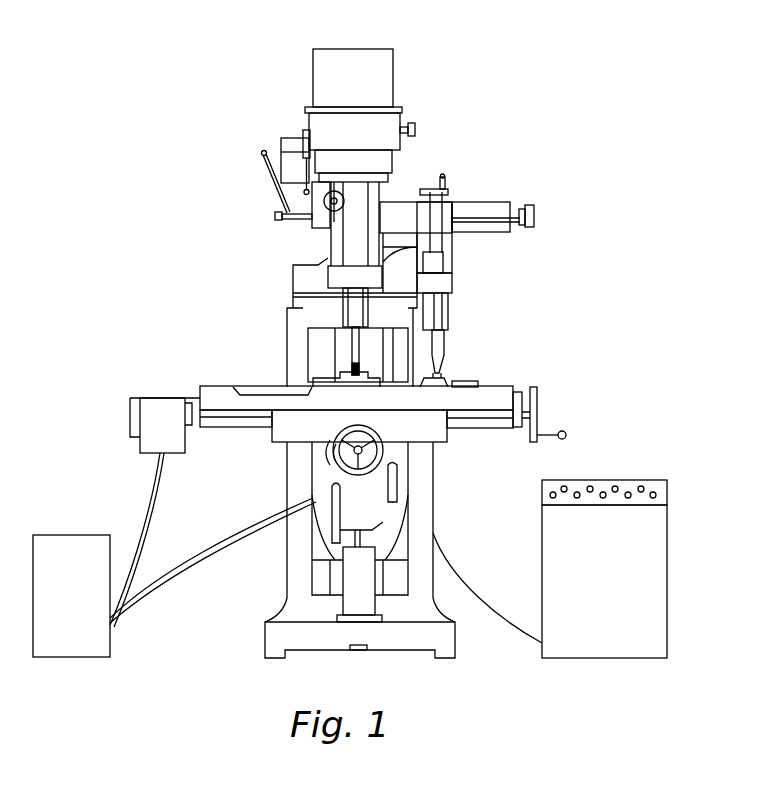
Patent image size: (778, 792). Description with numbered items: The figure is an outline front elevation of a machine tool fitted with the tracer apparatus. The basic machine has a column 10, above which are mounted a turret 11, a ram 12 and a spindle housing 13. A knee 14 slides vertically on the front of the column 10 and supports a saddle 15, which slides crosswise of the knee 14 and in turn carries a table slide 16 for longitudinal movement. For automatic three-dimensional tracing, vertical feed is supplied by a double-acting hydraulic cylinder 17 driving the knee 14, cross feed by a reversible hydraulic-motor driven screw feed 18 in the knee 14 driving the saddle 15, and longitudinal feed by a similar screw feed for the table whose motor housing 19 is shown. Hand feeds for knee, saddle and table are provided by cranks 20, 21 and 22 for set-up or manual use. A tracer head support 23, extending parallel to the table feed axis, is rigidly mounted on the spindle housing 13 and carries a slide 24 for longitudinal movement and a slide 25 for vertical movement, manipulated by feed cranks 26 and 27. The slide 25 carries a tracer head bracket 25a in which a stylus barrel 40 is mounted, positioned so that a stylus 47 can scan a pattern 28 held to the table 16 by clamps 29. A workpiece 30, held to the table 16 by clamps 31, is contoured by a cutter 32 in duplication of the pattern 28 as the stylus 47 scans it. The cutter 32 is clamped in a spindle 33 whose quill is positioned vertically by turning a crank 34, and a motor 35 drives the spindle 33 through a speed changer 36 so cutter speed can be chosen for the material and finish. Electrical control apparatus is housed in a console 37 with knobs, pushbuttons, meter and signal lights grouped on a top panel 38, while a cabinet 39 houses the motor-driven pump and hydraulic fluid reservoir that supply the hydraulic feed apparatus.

The column 10 is at (295, 320).
The turret 11 is at (296, 283).
The ram 12 is at (337, 266).
The spindle housing 13 is at (330, 262).
The knee 14 is at (328, 535).
The saddle 15 is at (428, 428).
The table slide 16 is at (270, 402).
The double-acting hydraulic cylinder 17 is at (348, 603).
The screw feed 18 is at (330, 453).
The motor housing 19 is at (140, 445).
The crank 20 is at (333, 512).
The crank 21 is at (400, 455).
The crank 22 is at (563, 432).
The tracer head support 23 is at (393, 207).
The slide 24 is at (493, 205).
The slide 25 is at (445, 237).
The tracer head bracket 25a is at (445, 282).
The feed crank 26 is at (528, 215).
The feed crank 27 is at (447, 185).
The pattern 28 is at (442, 381).
The clamps 29 is at (450, 381).
The workpiece 30 is at (310, 382).
The clamps 31 is at (235, 387).
The cutter 32 is at (352, 347).
The spindle 33 is at (347, 312).
The crank 34 is at (335, 190).
The motor 35 is at (368, 58).
The speed changer 36 is at (343, 127).
The console 37 is at (637, 537).
The top panel 38 is at (610, 480).
The cabinet 39 is at (64, 643).
The stylus barrel 40 is at (450, 312).
The stylus 47 is at (440, 355).